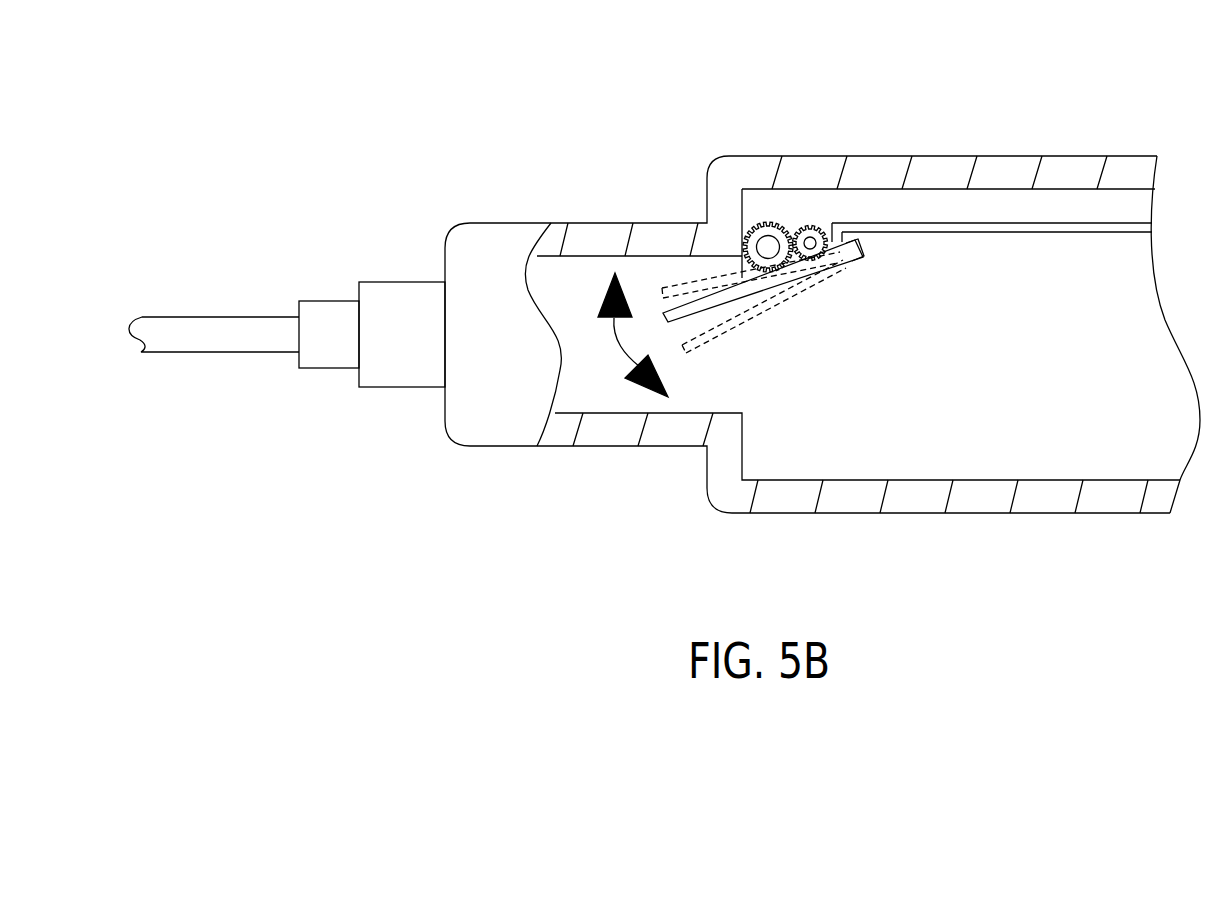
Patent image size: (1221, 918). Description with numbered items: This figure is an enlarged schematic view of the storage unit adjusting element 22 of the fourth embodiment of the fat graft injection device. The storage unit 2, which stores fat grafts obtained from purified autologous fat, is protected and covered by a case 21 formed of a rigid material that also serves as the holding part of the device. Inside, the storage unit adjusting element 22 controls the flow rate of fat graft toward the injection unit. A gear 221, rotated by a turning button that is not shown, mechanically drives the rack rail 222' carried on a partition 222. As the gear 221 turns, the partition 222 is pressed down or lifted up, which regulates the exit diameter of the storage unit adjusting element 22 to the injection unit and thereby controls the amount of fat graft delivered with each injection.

The storage unit 2 is at (822, 316).
The case 21 is at (1123, 170).
The storage unit adjusting element 22 is at (760, 195).
The gear 221 is at (787, 223).
The partition 222 is at (732, 179).
The rack rail 222' is at (791, 195).